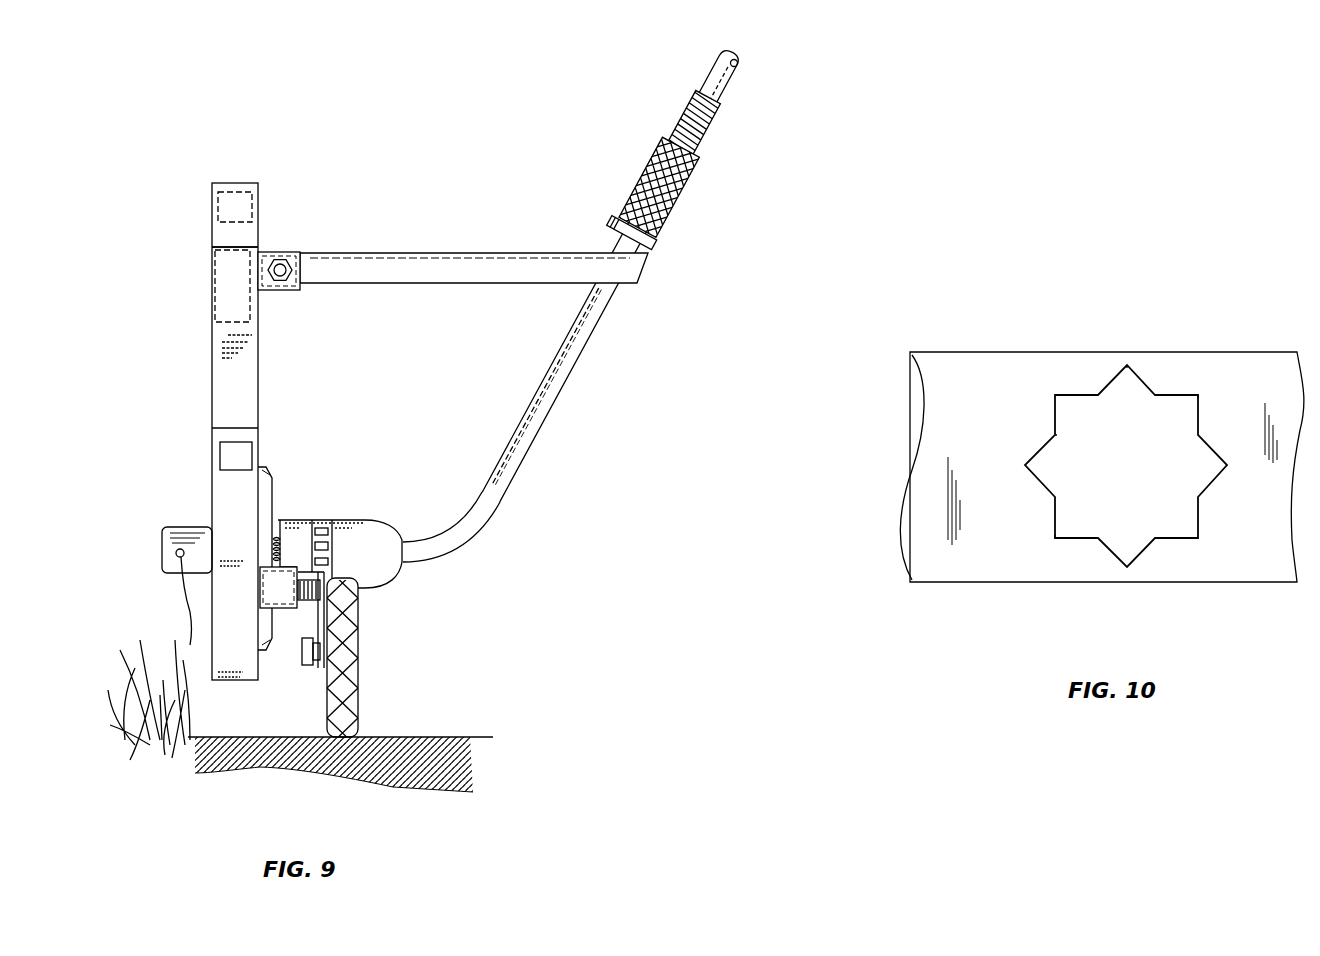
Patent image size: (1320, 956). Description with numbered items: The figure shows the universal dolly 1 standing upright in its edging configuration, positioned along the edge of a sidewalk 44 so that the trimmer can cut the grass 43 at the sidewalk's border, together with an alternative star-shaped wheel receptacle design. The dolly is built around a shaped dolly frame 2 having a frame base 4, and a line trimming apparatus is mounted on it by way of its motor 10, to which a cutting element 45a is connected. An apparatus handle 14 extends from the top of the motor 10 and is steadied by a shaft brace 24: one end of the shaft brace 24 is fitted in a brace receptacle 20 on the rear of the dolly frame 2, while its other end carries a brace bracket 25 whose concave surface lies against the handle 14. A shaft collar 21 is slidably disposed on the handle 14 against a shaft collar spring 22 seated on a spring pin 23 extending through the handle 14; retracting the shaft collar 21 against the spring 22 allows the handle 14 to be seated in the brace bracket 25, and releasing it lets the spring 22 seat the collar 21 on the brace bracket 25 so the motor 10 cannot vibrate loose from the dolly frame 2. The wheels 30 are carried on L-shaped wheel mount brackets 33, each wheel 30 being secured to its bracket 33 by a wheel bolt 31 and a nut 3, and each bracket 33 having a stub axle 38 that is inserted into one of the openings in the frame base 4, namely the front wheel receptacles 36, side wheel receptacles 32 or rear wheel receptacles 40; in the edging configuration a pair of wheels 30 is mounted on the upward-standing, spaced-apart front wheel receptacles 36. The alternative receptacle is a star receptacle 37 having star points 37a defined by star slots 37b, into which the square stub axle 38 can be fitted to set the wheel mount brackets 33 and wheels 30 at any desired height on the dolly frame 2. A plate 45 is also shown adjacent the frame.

In FIG. 9, the universal dolly 1 is at (192, 240).
In FIG. 9, the dolly frame 2 is at (205, 340).
In FIG. 10, the dolly frame 2 is at (902, 472).
In FIG. 9, the nut 3 is at (283, 282).
In FIG. 9, the frame base 4 is at (243, 383).
In FIG. 10, the frame base 4 is at (910, 538).
In FIG. 9, the motor 10 is at (373, 535).
In FIG. 9, the apparatus handle 14 is at (725, 90).
In FIG. 9, the brace receptacle 20 is at (274, 252).
In FIG. 9, the shaft collar 21 is at (655, 175).
In FIG. 9, the shaft collar spring 22 is at (683, 112).
In FIG. 9, the spring pin 23 is at (705, 98).
In FIG. 9, the shaft brace 24 is at (462, 270).
In FIG. 9, the brace bracket 25 is at (600, 235).
In FIG. 9, the wheels 30 is at (367, 663).
In FIG. 9, the wheel bolt 31 is at (308, 668).
In FIG. 9, the side wheel receptacles 32 is at (228, 460).
In FIG. 9, the wheel mount brackets 33 is at (322, 567).
In FIG. 9, the front wheel receptacles 36 is at (273, 592).
In FIG. 10, the star receptacle 37 is at (1182, 537).
In FIG. 10, the star points 37a is at (1198, 395).
In FIG. 10, the star slots 37b is at (1078, 403).
In FIG. 9, the stub axle 38 is at (305, 573).
In FIG. 9, the rear wheel receptacles 40 is at (238, 186).
In FIG. 9, the grass 43 is at (137, 642).
In FIG. 9, the sidewalk 44 is at (408, 735).
In FIG. 9, the mounting plate 45 is at (210, 640).
In FIG. 9, the cutting element 45a is at (177, 527).